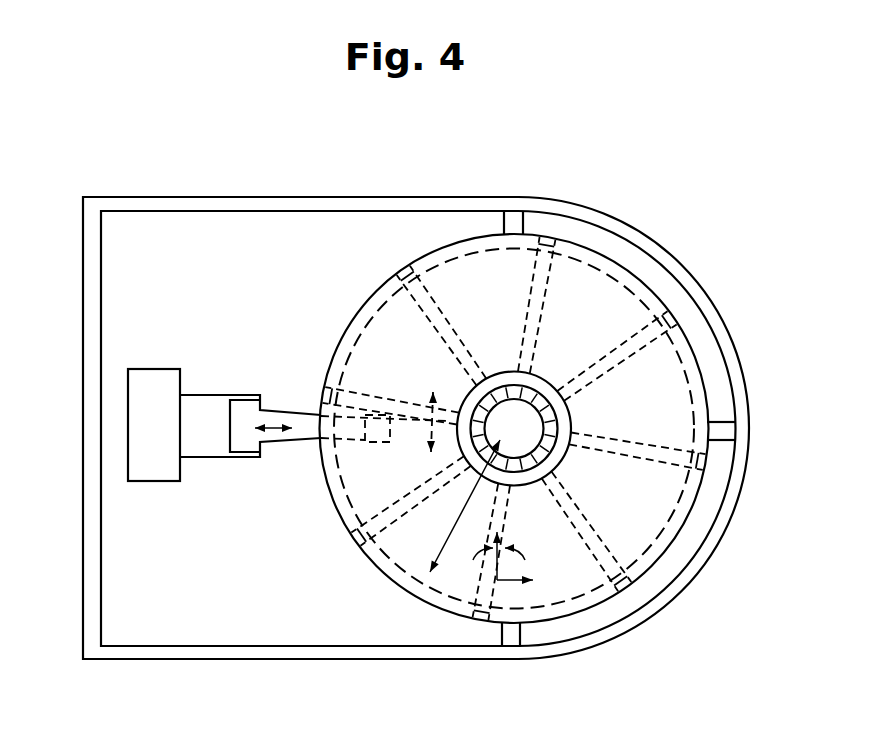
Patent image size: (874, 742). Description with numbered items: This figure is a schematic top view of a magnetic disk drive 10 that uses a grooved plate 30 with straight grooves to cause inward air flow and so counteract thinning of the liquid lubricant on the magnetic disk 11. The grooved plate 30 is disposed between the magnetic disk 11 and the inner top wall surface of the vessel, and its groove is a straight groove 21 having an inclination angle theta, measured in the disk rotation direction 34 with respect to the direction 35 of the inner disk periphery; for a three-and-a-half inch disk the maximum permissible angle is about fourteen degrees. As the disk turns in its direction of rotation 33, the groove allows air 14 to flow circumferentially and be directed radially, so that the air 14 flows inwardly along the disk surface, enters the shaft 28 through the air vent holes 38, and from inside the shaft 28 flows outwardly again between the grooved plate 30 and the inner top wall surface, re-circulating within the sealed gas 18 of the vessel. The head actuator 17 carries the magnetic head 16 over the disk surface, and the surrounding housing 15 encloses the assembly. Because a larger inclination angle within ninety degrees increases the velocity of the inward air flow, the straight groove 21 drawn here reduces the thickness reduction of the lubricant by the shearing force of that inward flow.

The magnetic disk drive 10 is at (222, 175).
The magnetic disk 11 is at (460, 258).
The air 14 is at (457, 490).
The housing 15 is at (92, 560).
The magnetic head 16 is at (245, 437).
The head actuator 17 is at (138, 433).
The sealed gas 18 is at (138, 232).
The straight groove 21 is at (628, 585).
The shaft 28 is at (545, 447).
The grooved plate 30 is at (615, 277).
The direction of rotation 33 is at (433, 392).
The direction of rotation of the disk 34 is at (512, 580).
The direction of the inner disk periphery 35 is at (497, 580).
The air vent holes 38 is at (545, 433).